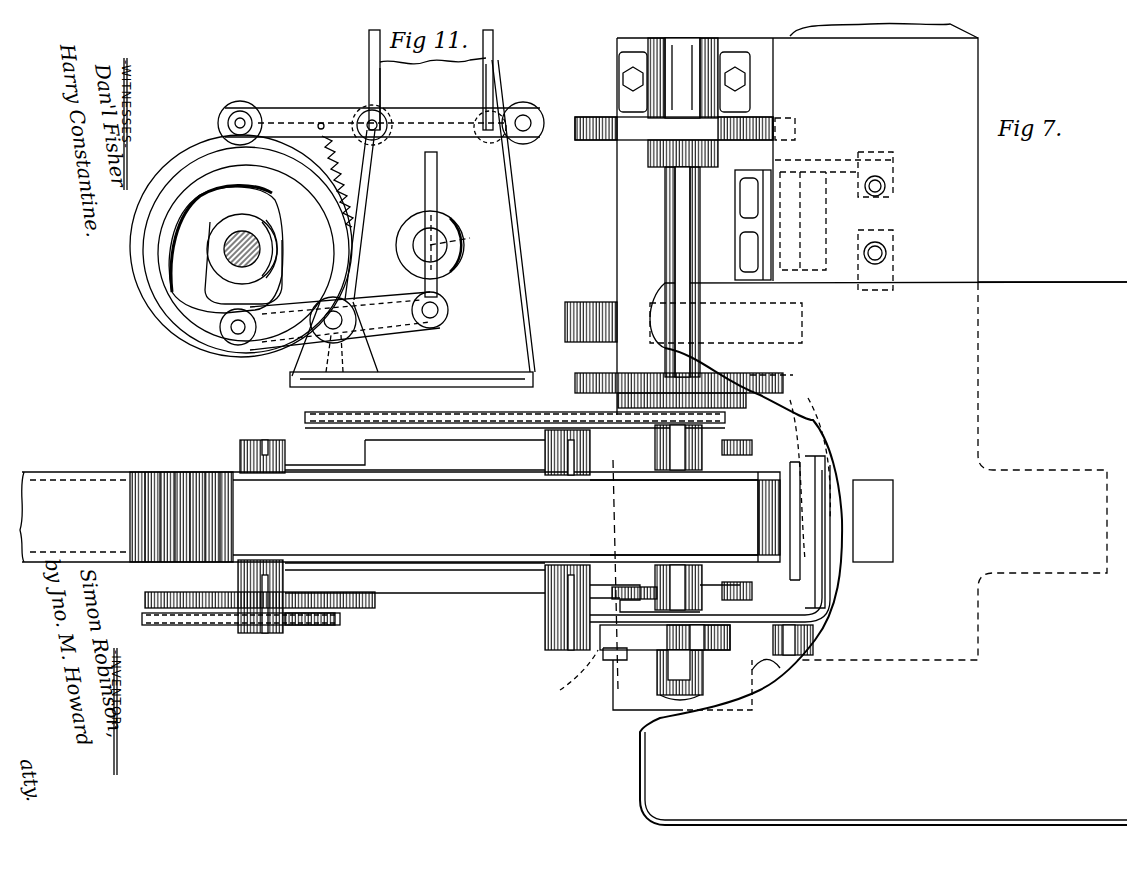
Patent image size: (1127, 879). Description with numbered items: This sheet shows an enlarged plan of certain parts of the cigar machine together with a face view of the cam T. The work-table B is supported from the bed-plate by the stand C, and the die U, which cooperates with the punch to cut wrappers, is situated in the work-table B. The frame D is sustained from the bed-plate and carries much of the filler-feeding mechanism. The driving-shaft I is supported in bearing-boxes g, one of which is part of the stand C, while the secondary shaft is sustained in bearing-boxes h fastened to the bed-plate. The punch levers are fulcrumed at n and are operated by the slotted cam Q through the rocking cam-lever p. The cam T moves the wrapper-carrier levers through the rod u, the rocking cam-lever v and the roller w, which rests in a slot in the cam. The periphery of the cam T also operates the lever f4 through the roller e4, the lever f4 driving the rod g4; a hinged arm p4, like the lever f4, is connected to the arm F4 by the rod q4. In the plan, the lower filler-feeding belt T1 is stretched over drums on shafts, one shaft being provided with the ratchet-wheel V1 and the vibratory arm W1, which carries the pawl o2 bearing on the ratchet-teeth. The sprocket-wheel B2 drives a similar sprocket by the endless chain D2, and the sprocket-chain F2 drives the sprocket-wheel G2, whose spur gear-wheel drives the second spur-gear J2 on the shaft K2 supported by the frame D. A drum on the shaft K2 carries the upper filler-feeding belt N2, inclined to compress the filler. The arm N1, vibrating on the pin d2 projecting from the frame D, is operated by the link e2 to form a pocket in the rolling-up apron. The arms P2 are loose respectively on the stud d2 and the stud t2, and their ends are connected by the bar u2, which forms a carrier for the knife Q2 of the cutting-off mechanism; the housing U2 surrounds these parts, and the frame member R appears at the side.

In FIG. 11, the cam T is at (221, 232).
In FIG. 7, the cam T is at (592, 141).
In FIG. 11, the roller w is at (224, 320).
In FIG. 11, the rocking cam-lever v is at (349, 321).
In FIG. 11, the stand C is at (412, 223).
In FIG. 11, the rod q4 is at (368, 52).
In FIG. 11, the rod g4 is at (493, 50).
In FIG. 11, the lever f4 is at (295, 108).
In FIG. 11, the roller e4 is at (238, 100).
In FIG. 11, the hinged arm p4 is at (222, 122).
In FIG. 11, the bearing-box g is at (397, 245).
In FIG. 11, the driving-shaft I is at (455, 239).
In FIG. 11, the rod u is at (440, 205).
In FIG. 7, the frame column R is at (616, 222).
In FIG. 7, the bearing-box h is at (683, 78).
In FIG. 7, the fulcrum n is at (664, 228).
In FIG. 7, the rocking cam-lever p is at (724, 275).
In FIG. 7, the slotted cam Q is at (576, 302).
In FIG. 7, the stud t2 is at (566, 396).
In FIG. 7, the housing U2 is at (810, 398).
In FIG. 7, the knife Q2 is at (822, 424).
In FIG. 7, the bar u2 is at (820, 452).
In FIG. 7, the link e2 is at (852, 468).
In FIG. 7, the die U is at (855, 523).
In FIG. 7, the work-table B is at (952, 471).
In FIG. 7, the upper filler-feeding belt N2 is at (400, 517).
In FIG. 7, the lower filler-feeding belt T1 is at (131, 517).
In FIG. 7, the arms P2 is at (615, 575).
In FIG. 7, the shaft K2 is at (255, 635).
In FIG. 7, the endless chain D2 is at (515, 432).
In FIG. 7, the frame D is at (436, 588).
In FIG. 7, the second spur-gear J2 is at (358, 608).
In FIG. 7, the sprocket-chain F2 is at (165, 626).
In FIG. 7, the sprocket-wheel G2 is at (316, 626).
In FIG. 7, the pin d2 is at (545, 645).
In FIG. 7, the sprocket-wheel B2 is at (705, 432).
In FIG. 7, the arm N1 is at (590, 660).
In FIG. 7, the vibratory arm W1 is at (645, 655).
In FIG. 7, the ratchet-wheel V1 is at (768, 640).
In FIG. 7, the pawl o2 is at (566, 670).